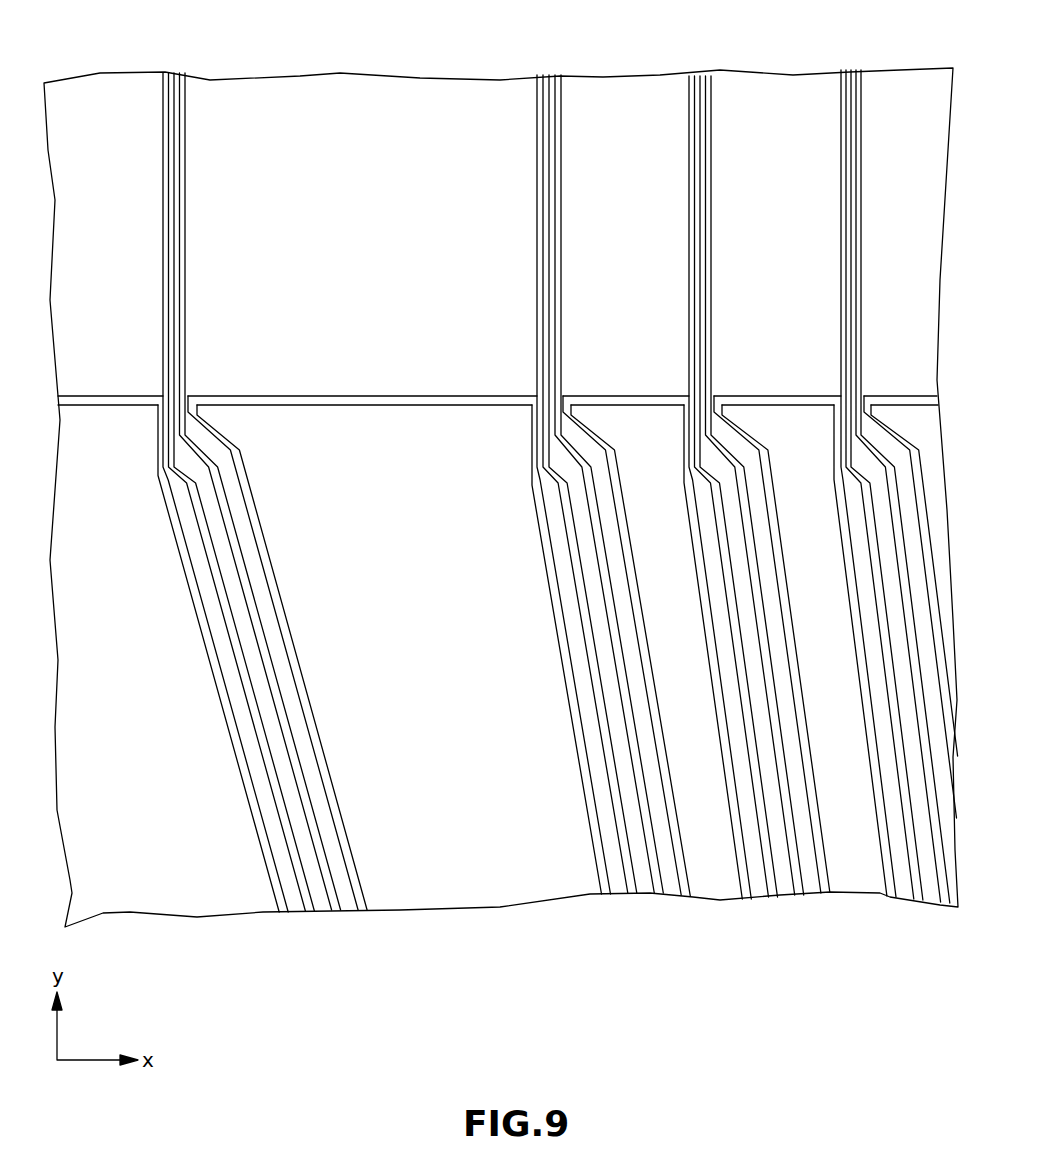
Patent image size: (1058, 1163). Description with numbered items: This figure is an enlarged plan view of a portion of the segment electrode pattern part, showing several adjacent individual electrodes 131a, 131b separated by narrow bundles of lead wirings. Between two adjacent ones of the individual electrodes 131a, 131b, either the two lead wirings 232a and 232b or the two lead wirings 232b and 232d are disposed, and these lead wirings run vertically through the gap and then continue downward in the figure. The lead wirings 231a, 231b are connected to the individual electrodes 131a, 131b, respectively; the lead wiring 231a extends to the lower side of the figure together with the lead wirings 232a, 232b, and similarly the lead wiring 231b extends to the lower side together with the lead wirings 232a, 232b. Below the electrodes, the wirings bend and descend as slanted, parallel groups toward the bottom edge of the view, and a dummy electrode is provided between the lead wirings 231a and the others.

The individual electrode 131a is at (117, 105).
The individual electrode 131b is at (607, 95).
The lead wiring 231a is at (332, 873).
The lead wiring 231b is at (672, 873).
The lead wiring 232a is at (250, 765).
The lead wiring 232b is at (292, 818).
The lead wiring 232d is at (766, 893).